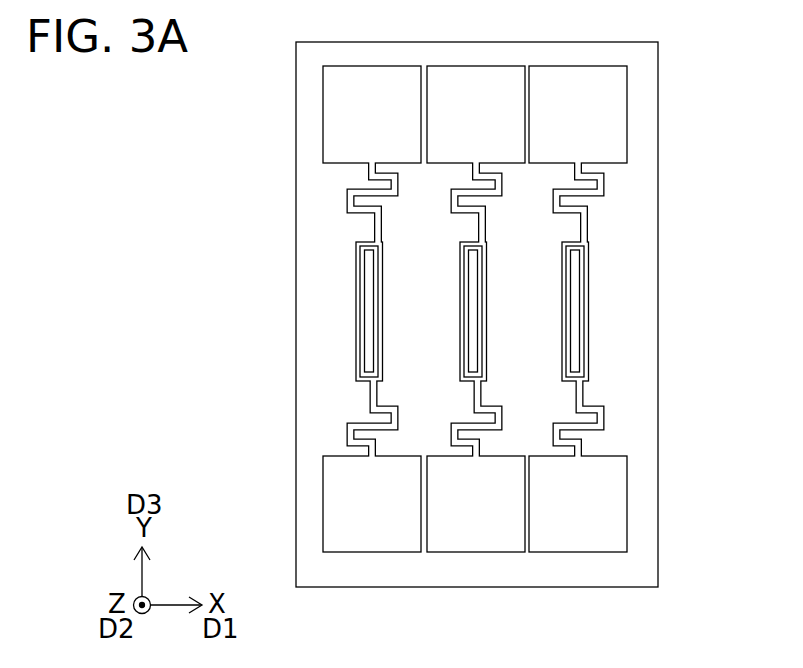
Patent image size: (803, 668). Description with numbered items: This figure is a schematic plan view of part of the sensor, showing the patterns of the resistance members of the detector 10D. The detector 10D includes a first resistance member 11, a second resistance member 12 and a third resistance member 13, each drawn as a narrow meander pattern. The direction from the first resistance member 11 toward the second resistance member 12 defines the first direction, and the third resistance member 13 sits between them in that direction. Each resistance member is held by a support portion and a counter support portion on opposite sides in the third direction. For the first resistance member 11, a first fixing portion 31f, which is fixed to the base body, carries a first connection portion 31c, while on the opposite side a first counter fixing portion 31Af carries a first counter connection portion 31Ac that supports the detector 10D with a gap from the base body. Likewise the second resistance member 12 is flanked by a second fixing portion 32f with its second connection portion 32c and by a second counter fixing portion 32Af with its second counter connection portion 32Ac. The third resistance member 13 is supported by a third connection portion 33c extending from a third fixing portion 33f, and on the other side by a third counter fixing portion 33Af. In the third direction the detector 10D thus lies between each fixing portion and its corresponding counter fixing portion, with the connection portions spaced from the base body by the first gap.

The detector 10D is at (293, 352).
The first resistance member 11 is at (357, 258).
The second resistance member 12 is at (590, 257).
The third resistance member 13 is at (460, 293).
The first fixing portion 31f is at (343, 148).
The first connection portion 31c is at (347, 191).
The first counter connection portion 31Ac is at (347, 441).
The first counter fixing portion 31Af is at (342, 488).
The second fixing portion 32f is at (604, 148).
The second connection portion 32c is at (605, 182).
The second counter connection portion 32Ac is at (607, 421).
The second counter fixing portion 32Af is at (605, 497).
The third fixing portion 33f is at (445, 105).
The third connection portion 33c is at (482, 166).
The third counter fixing portion 33Af is at (448, 530).